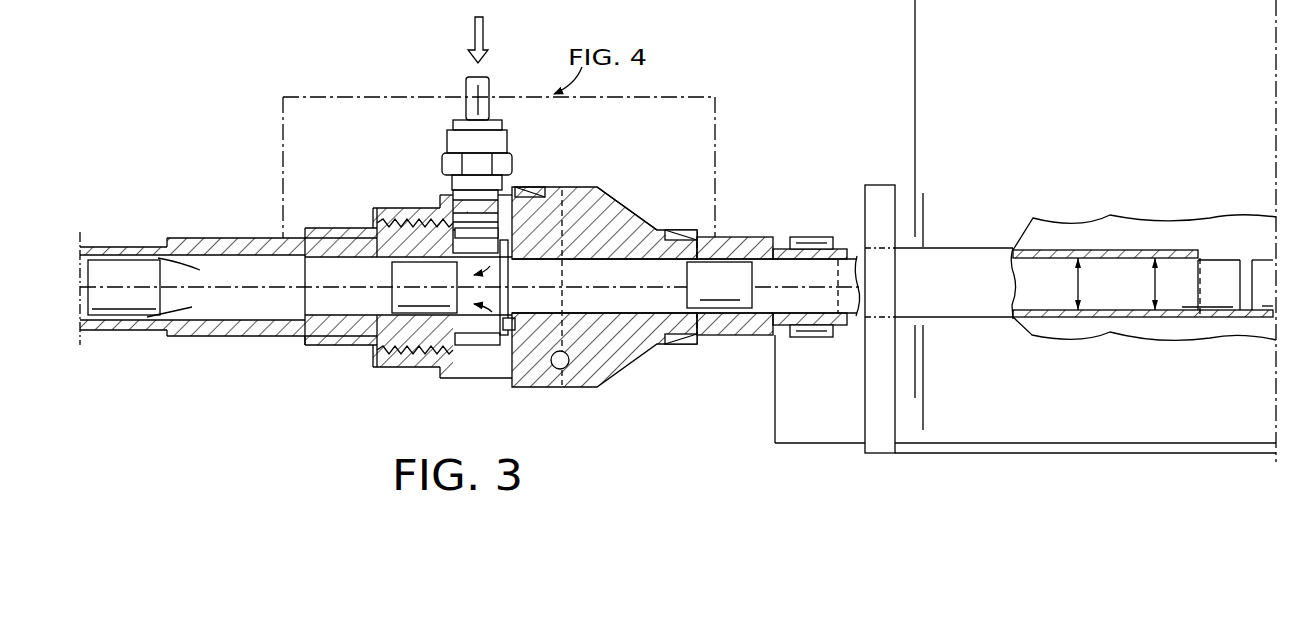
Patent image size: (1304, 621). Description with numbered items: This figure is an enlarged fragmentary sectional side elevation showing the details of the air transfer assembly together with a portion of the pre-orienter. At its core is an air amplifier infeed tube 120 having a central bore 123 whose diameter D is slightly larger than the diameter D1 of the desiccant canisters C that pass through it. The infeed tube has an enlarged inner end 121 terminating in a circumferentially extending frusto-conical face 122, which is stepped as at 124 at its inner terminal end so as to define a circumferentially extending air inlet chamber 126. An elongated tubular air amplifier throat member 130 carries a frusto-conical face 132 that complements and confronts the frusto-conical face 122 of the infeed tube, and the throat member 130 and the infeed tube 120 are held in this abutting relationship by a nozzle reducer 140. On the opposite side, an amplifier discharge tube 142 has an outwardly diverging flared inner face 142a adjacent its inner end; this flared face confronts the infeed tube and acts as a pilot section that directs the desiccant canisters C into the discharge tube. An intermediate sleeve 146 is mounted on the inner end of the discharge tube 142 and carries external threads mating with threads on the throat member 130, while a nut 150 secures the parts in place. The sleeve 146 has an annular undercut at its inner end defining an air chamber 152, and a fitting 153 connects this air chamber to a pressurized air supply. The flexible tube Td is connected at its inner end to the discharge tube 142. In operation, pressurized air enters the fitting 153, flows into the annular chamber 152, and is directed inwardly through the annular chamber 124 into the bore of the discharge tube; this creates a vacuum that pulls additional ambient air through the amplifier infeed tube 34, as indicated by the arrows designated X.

The air amplifier infeed tube 120 is at (765, 207).
The enlarged inner end 121 is at (612, 220).
The frusto-conical face 122 is at (538, 214).
The central bore 123 is at (1118, 266).
The step 124 is at (508, 316).
The air inlet chamber 126 is at (512, 333).
The air amplifier throat member 130 is at (432, 369).
The frusto-conical face 132 is at (572, 368).
The nozzle reducer 140 is at (605, 198).
The amplifier discharge tube 142 is at (250, 210).
The flared inner face 142a is at (304, 338).
The intermediate sleeve 146 is at (350, 346).
The nut 150 is at (388, 207).
The air chamber 152 is at (482, 342).
The fitting 153 is at (450, 142).
The amplifier infeed tube 34 is at (992, 227).
The desiccant canisters C is at (130, 265).
The arrows X is at (1168, 297).
The diameter D is at (1074, 284).
The diameter D1 is at (1145, 284).
The flexible tube Td is at (130, 330).